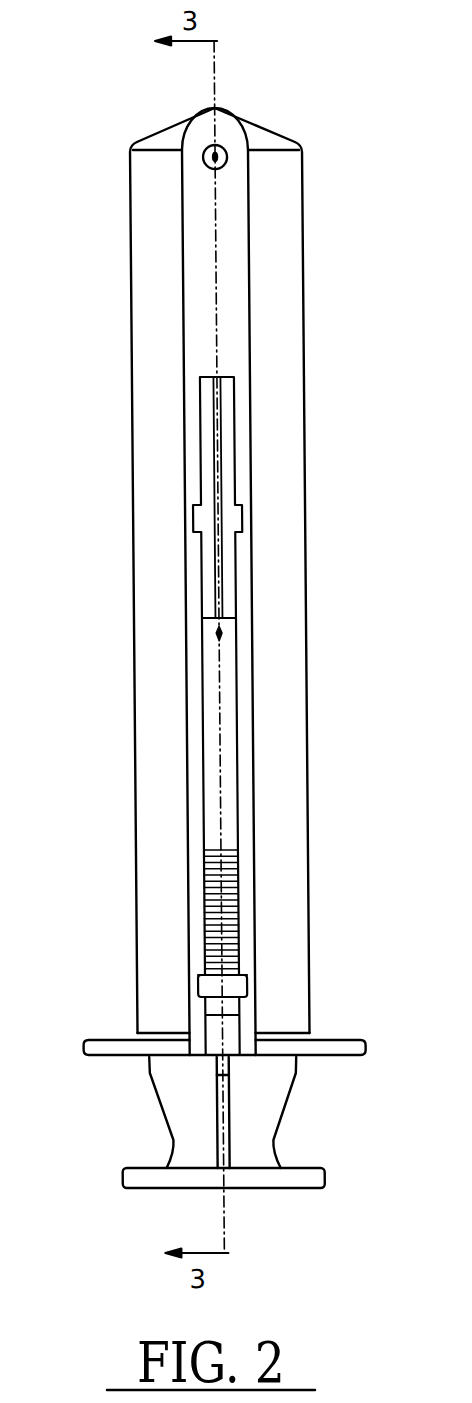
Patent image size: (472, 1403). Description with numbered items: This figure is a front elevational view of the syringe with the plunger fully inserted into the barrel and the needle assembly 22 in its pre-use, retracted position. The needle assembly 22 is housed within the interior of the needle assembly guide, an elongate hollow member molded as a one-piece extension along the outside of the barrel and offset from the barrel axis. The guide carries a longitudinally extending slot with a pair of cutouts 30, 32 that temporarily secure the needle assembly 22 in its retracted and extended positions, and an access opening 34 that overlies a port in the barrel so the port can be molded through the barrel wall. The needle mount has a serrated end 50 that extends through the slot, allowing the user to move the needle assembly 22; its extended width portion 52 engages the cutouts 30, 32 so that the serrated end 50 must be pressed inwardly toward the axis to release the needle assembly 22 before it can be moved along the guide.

The needle assembly 22 is at (227, 790).
The cutout 30 is at (236, 985).
The cutout 32 is at (235, 510).
The access opening 34 is at (227, 145).
The serrated end 50 is at (206, 888).
The extended width portion 52 is at (198, 985).